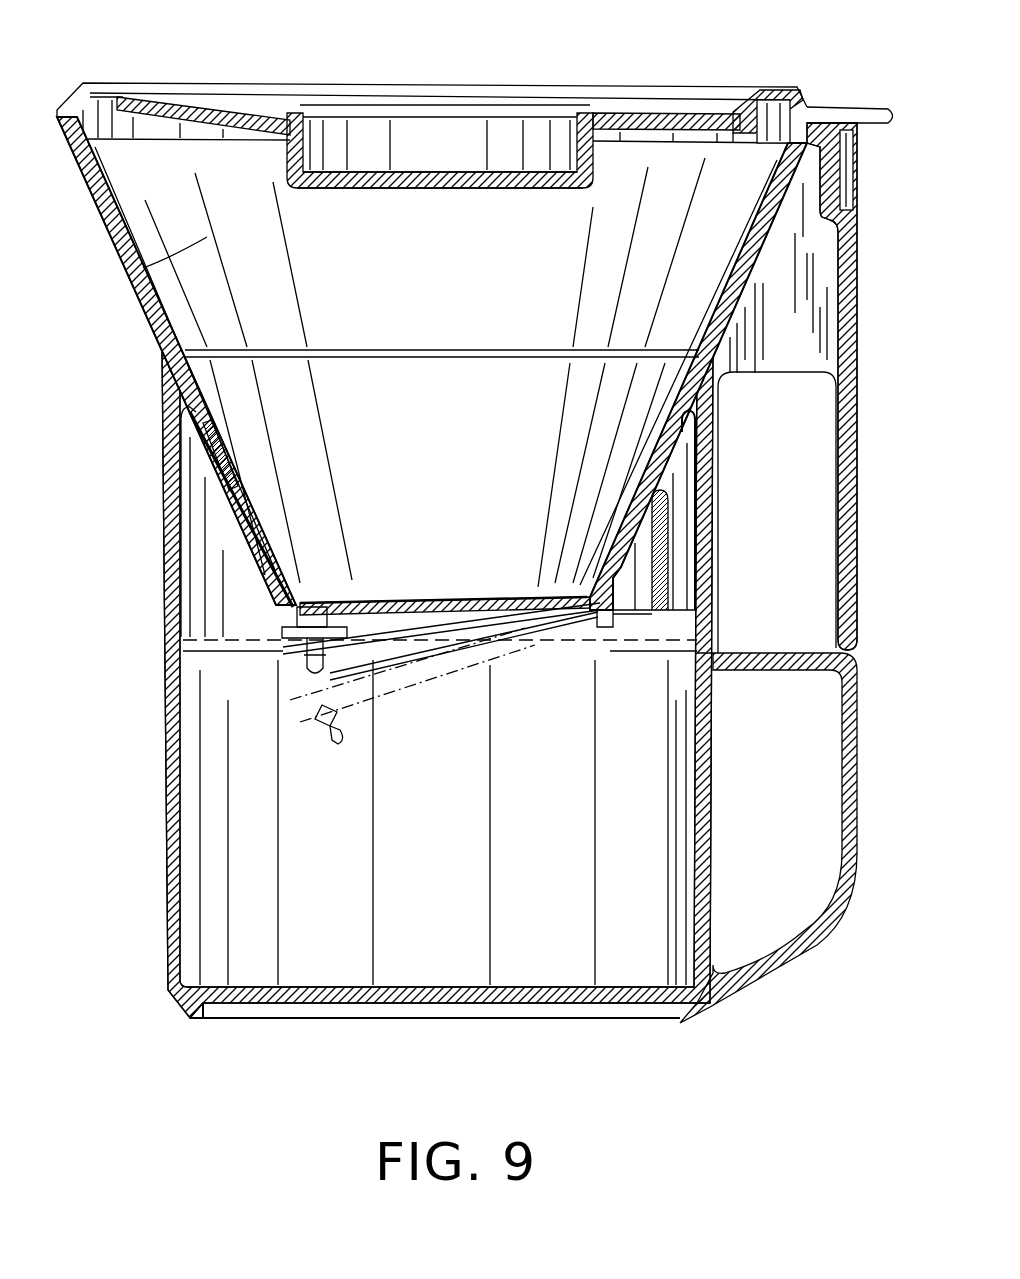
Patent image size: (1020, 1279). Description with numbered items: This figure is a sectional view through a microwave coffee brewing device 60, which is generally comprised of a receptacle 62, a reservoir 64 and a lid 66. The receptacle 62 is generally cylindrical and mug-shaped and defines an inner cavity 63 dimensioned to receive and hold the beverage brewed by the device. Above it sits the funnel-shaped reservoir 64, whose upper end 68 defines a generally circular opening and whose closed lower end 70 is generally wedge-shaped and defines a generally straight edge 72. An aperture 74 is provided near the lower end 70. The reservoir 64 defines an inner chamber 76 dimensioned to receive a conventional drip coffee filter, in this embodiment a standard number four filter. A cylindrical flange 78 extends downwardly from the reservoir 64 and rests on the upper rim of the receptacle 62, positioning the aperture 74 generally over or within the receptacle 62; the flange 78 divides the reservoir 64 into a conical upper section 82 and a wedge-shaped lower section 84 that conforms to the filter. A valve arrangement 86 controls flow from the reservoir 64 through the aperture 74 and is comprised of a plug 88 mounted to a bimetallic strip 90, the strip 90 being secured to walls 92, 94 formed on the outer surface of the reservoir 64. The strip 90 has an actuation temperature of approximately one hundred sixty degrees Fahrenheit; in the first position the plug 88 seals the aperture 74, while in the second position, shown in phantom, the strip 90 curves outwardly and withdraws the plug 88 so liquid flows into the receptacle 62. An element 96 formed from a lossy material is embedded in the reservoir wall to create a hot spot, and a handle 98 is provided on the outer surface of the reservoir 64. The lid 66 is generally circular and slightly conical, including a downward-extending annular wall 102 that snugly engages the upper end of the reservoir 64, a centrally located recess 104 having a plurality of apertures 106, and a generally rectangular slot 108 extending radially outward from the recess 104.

The microwave coffee brewing device 60 is at (136, 67).
The receptacle 62 is at (165, 800).
The inner cavity 63 is at (450, 850).
The reservoir 64 is at (155, 333).
The lid 66 is at (207, 83).
The upper end 68 is at (728, 166).
The lower end 70 is at (492, 573).
The straight edge 72 is at (423, 601).
The aperture 74 is at (313, 610).
The inner chamber 76 is at (455, 264).
The cylindrical flange 78 is at (165, 487).
The upper section 82 is at (143, 268).
The lower section 84 is at (240, 523).
The valve arrangement 86 is at (268, 637).
The plug 88 is at (283, 643).
The bimetallic strip 90 is at (405, 658).
The wall 92 is at (613, 590).
The wall 94 is at (667, 590).
The element 96 is at (185, 410).
The handle 98 is at (856, 497).
The annular wall 102 is at (768, 106).
The recess 104 is at (363, 140).
The apertures 106 is at (440, 170).
The slot 108 is at (640, 103).